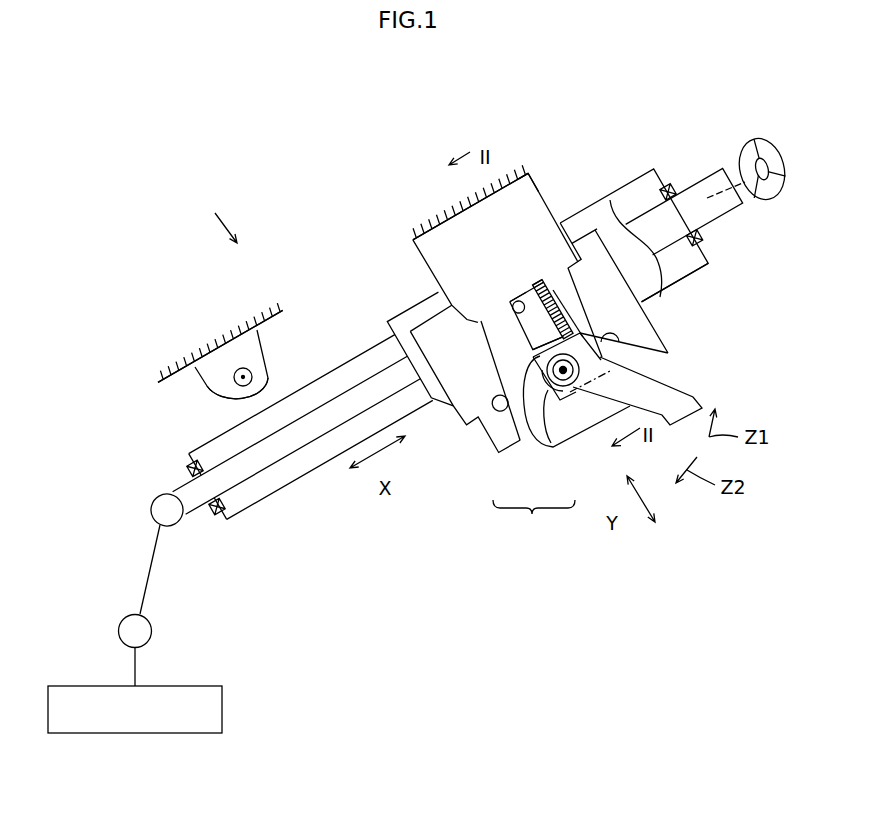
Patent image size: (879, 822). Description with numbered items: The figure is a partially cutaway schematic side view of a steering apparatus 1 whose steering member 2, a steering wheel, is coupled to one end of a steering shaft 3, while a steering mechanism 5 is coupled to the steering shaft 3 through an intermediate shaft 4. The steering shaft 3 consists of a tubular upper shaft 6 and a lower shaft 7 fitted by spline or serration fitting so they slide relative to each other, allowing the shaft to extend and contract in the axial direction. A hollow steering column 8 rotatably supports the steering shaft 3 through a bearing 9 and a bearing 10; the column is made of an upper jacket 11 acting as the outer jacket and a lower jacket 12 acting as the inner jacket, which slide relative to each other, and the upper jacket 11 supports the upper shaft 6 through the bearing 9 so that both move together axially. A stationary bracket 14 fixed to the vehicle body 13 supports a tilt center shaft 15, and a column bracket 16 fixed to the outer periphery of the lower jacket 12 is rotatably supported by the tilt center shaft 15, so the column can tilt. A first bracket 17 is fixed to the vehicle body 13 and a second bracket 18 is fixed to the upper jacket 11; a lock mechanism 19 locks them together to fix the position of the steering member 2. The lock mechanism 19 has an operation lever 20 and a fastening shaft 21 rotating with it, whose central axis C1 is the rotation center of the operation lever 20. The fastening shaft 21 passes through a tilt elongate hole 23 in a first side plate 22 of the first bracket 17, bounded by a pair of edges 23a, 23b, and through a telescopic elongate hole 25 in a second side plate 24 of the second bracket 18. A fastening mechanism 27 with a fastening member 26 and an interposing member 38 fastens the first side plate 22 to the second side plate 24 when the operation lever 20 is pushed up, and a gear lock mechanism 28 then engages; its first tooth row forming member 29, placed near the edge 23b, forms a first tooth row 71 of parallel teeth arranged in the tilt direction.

The steering apparatus 1 is at (217, 216).
The steering member 2 is at (744, 140).
The steering shaft 3 is at (678, 177).
The intermediate shaft 4 is at (158, 582).
The steering mechanism 5 is at (222, 711).
The upper shaft 6 is at (737, 207).
The lower shaft 7 is at (301, 440).
The steering column 8 is at (695, 287).
The bearing 9 is at (700, 245).
The bearing 10 is at (215, 515).
The upper jacket 11 is at (597, 200).
The lower jacket 12 is at (341, 364).
The vehicle body 13 is at (406, 226).
The stationary bracket 14 is at (213, 379).
The tilt center shaft 15 is at (246, 376).
The column bracket 16 is at (239, 408).
The first bracket 17 is at (404, 268).
The second bracket 18 is at (672, 340).
The lock mechanism 19 is at (593, 432).
The operation lever 20 is at (655, 388).
The fastening shaft 21 is at (597, 407).
The first side plate 22 is at (535, 200).
The tilt elongate hole 23 is at (522, 303).
The edge 23a is at (512, 300).
The edge 23b is at (520, 336).
The second side plate 24 is at (470, 410).
The telescopic elongate hole 25 is at (495, 398).
The fastening member 26 is at (528, 432).
The fastening mechanism 27 is at (534, 516).
The gear lock mechanism 28 is at (580, 314).
The first tooth row forming member 29 is at (550, 291).
The interposing member 38 is at (550, 448).
The first tooth row 71 is at (540, 282).
The central axis C1 is at (652, 360).